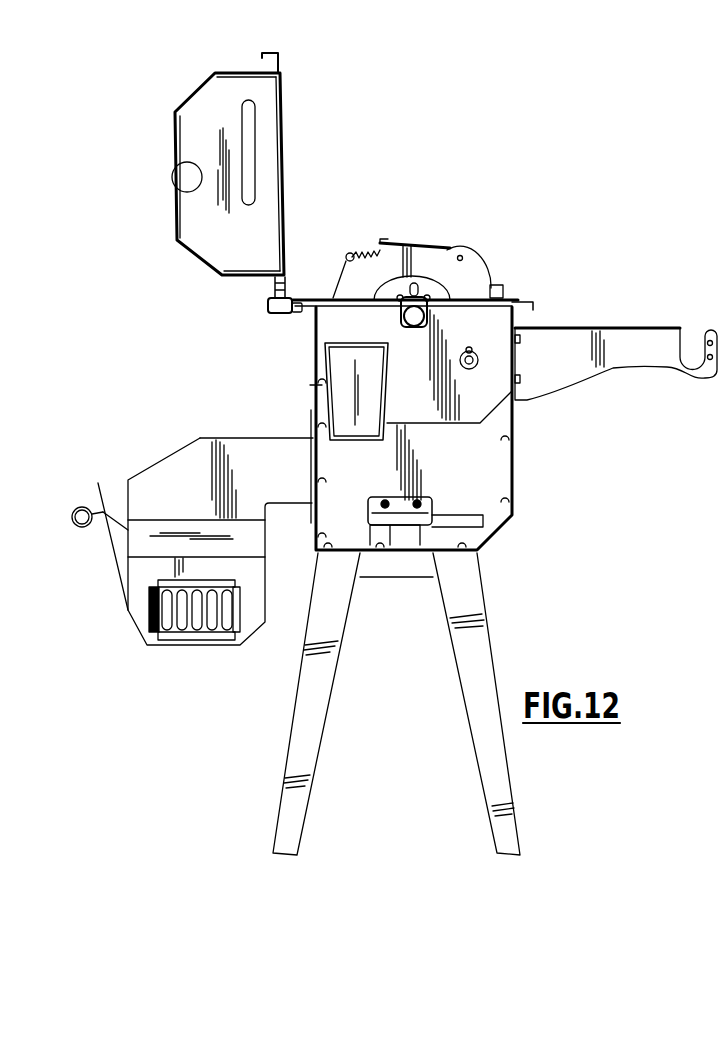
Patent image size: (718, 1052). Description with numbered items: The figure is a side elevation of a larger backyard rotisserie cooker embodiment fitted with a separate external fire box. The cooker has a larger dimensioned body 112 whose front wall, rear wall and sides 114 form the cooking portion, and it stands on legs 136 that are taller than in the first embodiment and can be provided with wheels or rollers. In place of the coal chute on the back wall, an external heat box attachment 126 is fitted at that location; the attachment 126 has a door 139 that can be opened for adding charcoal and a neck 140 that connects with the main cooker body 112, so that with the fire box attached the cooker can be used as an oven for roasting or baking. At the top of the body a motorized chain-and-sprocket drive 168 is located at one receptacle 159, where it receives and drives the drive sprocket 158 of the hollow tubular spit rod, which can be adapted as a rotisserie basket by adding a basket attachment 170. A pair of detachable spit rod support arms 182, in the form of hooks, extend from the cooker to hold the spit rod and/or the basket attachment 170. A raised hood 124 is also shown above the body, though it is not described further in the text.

The body 112 is at (559, 581).
The side 114 is at (497, 477).
The blade guard hood 124 is at (177, 138).
The external heat box attachment 126 is at (160, 458).
The legs 136 is at (318, 753).
The door 139 is at (110, 552).
The neck 140 is at (278, 443).
The drive sprocket 158 is at (418, 298).
The receptacle 159 is at (400, 312).
The sprocket drive 168 is at (500, 317).
The basket attachment 170 is at (438, 247).
The spit rod support arms 182 is at (627, 327).